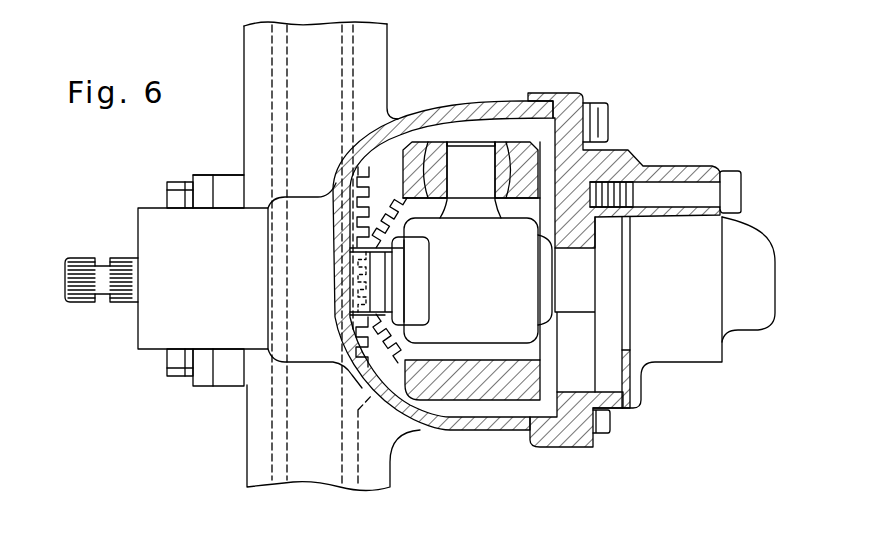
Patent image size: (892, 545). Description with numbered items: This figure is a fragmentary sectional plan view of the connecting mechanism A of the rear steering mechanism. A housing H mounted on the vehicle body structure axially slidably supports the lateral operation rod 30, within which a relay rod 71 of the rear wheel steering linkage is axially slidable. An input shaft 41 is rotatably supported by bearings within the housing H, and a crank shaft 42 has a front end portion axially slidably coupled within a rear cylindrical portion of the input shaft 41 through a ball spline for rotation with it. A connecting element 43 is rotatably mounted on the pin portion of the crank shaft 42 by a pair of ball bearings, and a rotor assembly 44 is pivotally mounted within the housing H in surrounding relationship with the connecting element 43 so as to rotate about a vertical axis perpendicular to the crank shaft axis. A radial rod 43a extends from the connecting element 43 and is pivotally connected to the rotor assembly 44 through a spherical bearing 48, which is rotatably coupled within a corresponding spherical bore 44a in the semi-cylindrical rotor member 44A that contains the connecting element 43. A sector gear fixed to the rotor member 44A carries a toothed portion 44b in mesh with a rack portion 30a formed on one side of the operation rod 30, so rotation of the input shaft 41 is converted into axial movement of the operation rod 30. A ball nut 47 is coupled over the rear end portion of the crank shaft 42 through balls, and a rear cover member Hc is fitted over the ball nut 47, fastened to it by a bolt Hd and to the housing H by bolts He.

The housing H is at (257, 410).
The rear cover member Hc is at (776, 313).
The bolt Hd is at (742, 192).
The bolts He is at (600, 103).
The connecting mechanism A is at (545, 187).
The operation rod 30 is at (362, 468).
The rack portion 30a is at (342, 328).
The input shaft 41 is at (105, 297).
The crank shaft 42 is at (357, 277).
The connecting element 43 is at (527, 331).
The radial rod 43a is at (473, 153).
The rotor assembly 44 is at (537, 389).
The spherical bore 44a is at (432, 155).
The semi-cylindrical rotor member 44A is at (466, 383).
The toothed portion 44b is at (384, 388).
The ball nut 47 is at (615, 371).
The spherical bearing 48 is at (512, 133).
The relay rod 71 is at (316, 470).